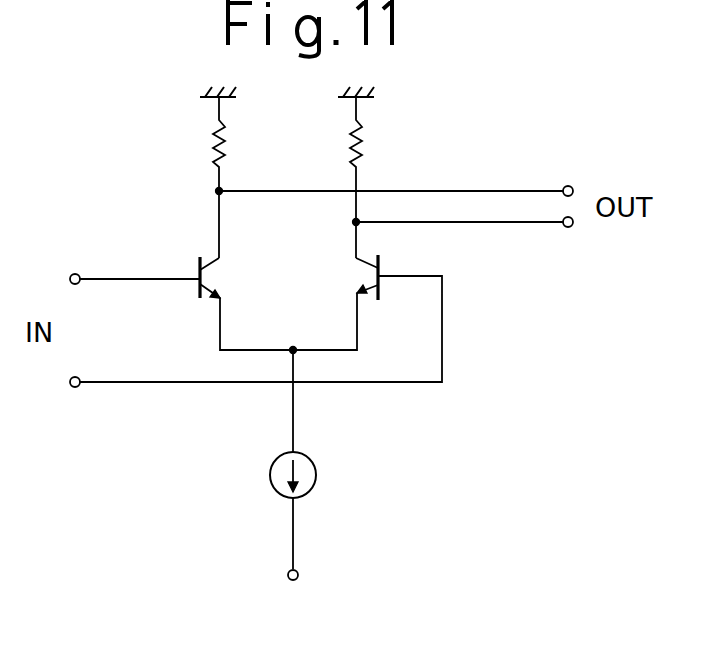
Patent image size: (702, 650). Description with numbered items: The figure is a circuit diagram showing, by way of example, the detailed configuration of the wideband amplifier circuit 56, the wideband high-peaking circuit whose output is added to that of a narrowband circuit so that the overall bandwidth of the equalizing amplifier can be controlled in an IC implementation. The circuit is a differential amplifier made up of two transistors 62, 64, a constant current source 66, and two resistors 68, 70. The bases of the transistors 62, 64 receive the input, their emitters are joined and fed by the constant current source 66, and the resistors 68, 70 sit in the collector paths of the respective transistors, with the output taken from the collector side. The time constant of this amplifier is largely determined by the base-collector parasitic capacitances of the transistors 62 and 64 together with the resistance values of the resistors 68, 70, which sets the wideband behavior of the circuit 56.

The wideband amplifier circuit 56 is at (536, 571).
The transistor 62 is at (197, 266).
The transistor 64 is at (381, 266).
The constant current source 66 is at (317, 468).
The resistor 68 is at (212, 146).
The resistor 70 is at (362, 137).